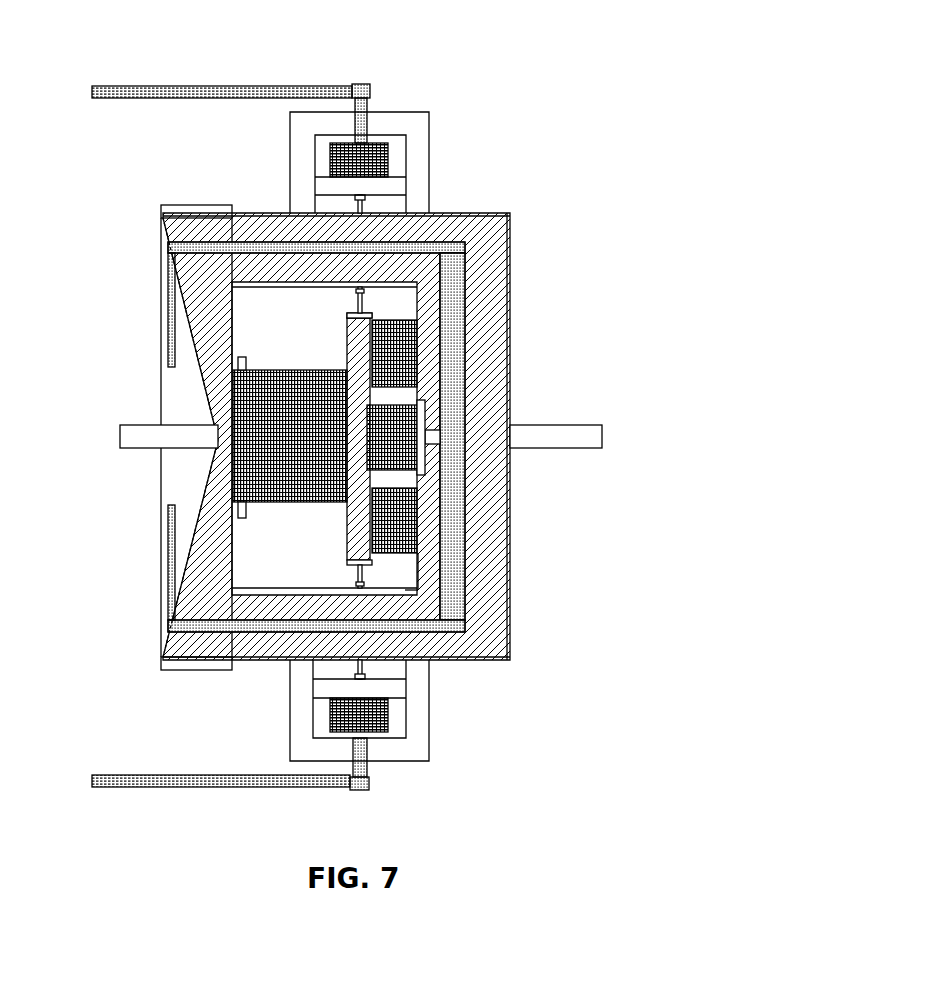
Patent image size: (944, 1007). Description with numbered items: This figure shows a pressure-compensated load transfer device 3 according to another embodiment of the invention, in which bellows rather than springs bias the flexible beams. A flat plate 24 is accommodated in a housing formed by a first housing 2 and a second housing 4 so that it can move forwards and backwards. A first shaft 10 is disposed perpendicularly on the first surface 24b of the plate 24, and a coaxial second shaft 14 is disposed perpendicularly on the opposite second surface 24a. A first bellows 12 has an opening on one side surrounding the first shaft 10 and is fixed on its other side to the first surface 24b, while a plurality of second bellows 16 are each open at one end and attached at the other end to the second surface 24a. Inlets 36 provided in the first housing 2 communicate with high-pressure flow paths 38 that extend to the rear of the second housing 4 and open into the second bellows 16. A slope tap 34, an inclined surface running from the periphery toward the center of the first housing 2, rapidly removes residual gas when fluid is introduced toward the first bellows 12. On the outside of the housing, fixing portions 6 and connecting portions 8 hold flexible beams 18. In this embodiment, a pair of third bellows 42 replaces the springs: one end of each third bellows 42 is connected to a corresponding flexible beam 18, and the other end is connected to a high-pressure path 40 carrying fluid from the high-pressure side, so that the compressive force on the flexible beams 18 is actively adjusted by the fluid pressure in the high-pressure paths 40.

The first housing 2 is at (190, 655).
The pressure-compensated load transfer device 3 is at (527, 207).
The second housing 4 is at (510, 610).
The fixing portion 6 is at (300, 119).
The connecting portion 8 is at (318, 184).
The first shaft 10 is at (120, 437).
The first bellows 12 is at (257, 503).
The second shaft 14 is at (602, 437).
The second bellows 16 is at (417, 523).
The flexible beam 18 is at (365, 200).
The plate 24 is at (370, 478).
The second surface 24a is at (372, 319).
The first surface 24b is at (347, 327).
The slope tap 34 is at (197, 540).
The inlet 36 is at (170, 289).
The high-pressure flow path 38 is at (450, 623).
The high-pressure path 40 is at (148, 86).
The third bellows 42 is at (385, 158).